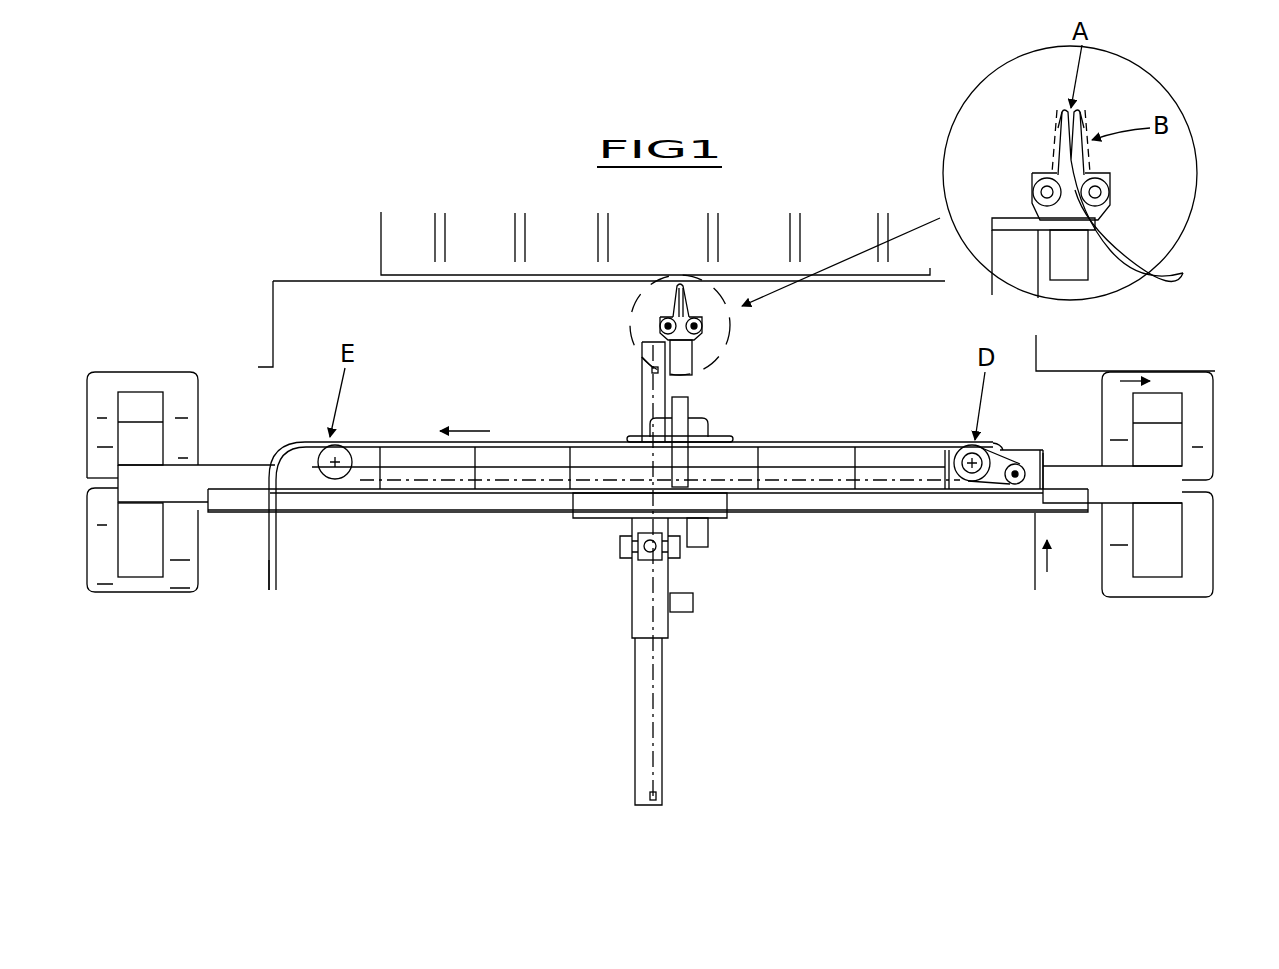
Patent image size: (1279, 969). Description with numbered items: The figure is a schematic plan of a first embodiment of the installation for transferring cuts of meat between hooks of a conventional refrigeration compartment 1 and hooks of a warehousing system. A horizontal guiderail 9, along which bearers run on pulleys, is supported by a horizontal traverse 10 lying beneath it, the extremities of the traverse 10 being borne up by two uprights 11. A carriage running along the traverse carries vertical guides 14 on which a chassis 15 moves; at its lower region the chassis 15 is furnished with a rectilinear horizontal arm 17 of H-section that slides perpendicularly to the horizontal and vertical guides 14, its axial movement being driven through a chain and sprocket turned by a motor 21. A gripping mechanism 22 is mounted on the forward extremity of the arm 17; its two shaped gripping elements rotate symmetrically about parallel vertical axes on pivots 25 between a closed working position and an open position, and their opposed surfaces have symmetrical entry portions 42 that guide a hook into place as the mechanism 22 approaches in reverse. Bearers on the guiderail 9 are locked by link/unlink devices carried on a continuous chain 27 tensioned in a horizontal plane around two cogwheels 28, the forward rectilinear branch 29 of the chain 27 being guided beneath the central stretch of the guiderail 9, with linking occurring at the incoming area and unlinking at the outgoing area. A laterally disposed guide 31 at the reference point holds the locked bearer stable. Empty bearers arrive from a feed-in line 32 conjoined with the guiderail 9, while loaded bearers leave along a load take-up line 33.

The refrigeration compartment 1 is at (368, 247).
The horizontal guiderail 9 is at (273, 445).
The horizontal traverse 10 is at (1067, 475).
The uprights 11 is at (140, 570).
The vertical guides 14 is at (622, 546).
The chassis 15 is at (682, 578).
The horizontal arm 17 is at (628, 668).
The motor 21 is at (682, 615).
The gripping mechanism 22 is at (672, 303).
The pivots 25 is at (660, 326).
The chain 27 is at (457, 489).
The cogwheels 28 is at (350, 472).
The forward rectilinear branch 29 is at (851, 444).
The laterally disposed guide 31 is at (730, 436).
The feed-in line 32 is at (1035, 578).
The load take-up line 33 is at (262, 570).
The entry portions 42 is at (978, 176).